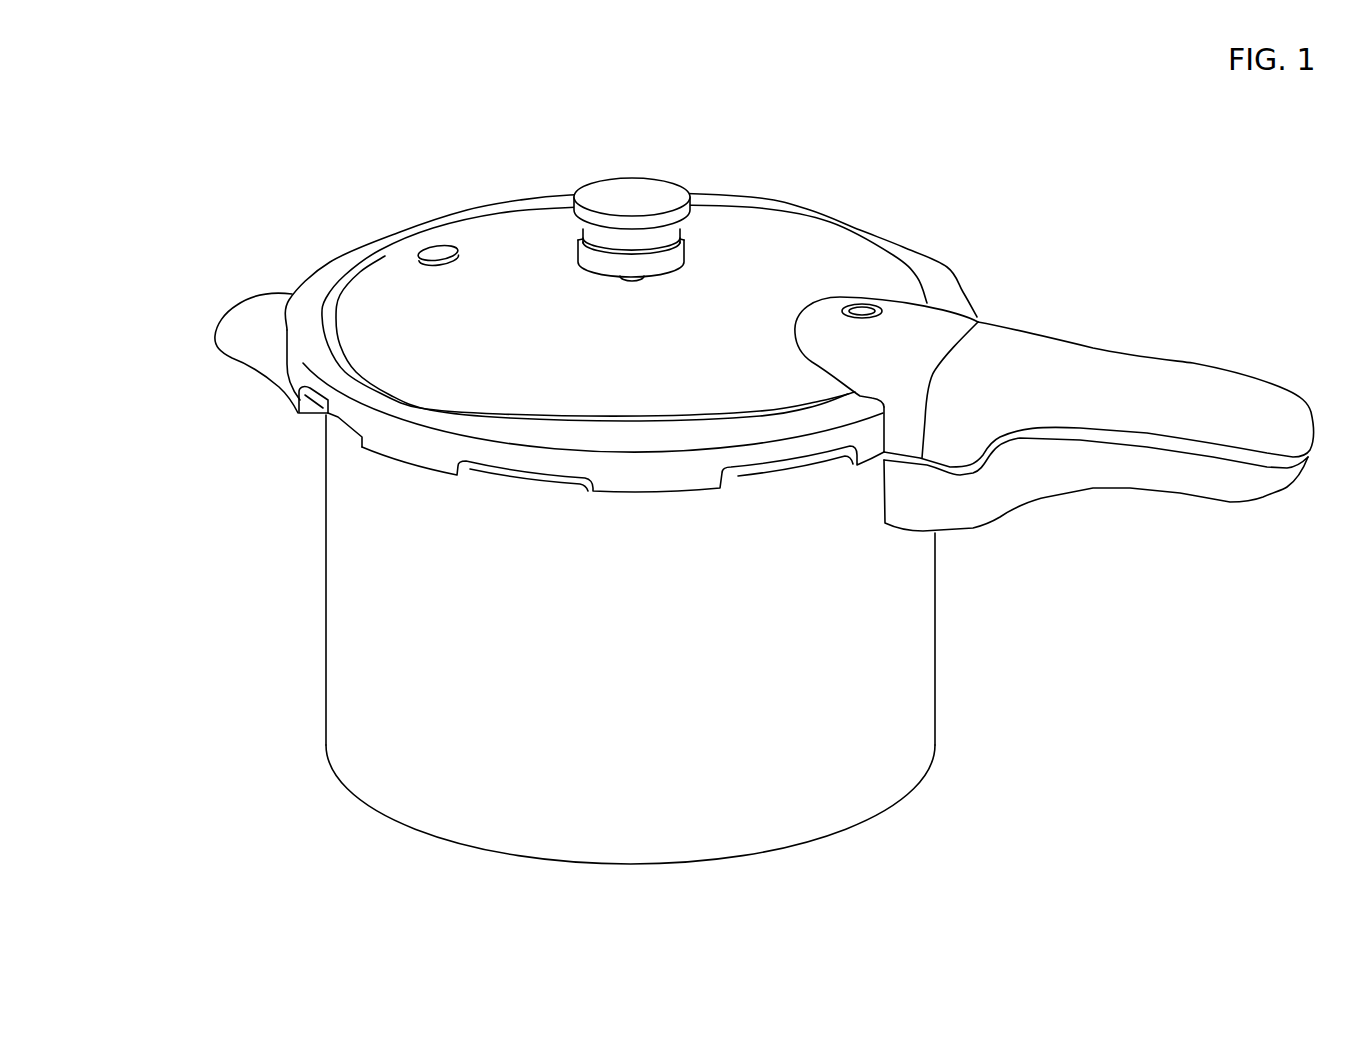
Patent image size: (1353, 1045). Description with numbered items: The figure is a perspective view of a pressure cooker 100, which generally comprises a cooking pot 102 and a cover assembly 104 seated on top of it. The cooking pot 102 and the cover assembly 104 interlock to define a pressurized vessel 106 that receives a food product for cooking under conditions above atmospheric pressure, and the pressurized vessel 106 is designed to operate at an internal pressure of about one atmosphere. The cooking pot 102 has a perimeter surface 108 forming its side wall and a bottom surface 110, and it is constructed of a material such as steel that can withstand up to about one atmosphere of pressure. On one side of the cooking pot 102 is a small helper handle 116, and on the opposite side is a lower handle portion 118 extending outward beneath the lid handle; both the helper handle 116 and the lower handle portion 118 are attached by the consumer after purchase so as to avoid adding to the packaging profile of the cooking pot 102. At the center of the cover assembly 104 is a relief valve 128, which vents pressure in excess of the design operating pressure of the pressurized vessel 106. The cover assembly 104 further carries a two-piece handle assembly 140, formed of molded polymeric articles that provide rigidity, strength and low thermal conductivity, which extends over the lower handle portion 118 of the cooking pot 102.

The pressure cooker 100 is at (902, 233).
The cooking pot 102 is at (928, 667).
The cover assembly 104 is at (783, 230).
The pressurized vessel 106 is at (328, 605).
The perimeter surface 108 is at (928, 720).
The bottom surface 110 is at (680, 864).
The helper handle 116 is at (232, 358).
The lower handle portion 118 is at (1037, 500).
The relief valve 128 is at (640, 188).
The two-piece handle assembly 140 is at (1000, 320).